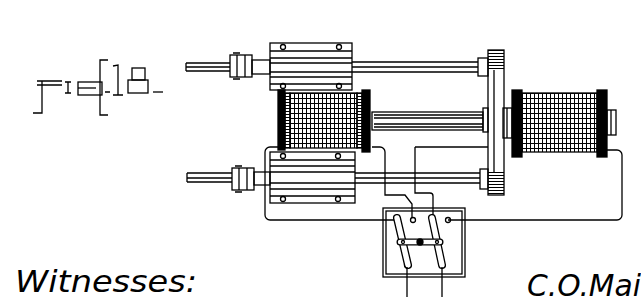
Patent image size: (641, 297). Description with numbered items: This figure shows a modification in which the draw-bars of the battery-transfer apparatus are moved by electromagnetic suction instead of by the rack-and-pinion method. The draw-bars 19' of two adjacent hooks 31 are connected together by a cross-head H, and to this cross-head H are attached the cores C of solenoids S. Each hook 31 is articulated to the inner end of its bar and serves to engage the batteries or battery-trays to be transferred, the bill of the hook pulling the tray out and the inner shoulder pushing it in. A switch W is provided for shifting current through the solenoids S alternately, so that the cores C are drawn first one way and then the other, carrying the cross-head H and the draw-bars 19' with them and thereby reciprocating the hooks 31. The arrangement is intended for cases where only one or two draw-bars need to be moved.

The draw-bar 19' is at (247, 130).
The hook 31 is at (187, 65).
The solenoid S is at (280, 116).
The core C is at (437, 113).
The cross-head H is at (499, 84).
The switch W is at (398, 243).